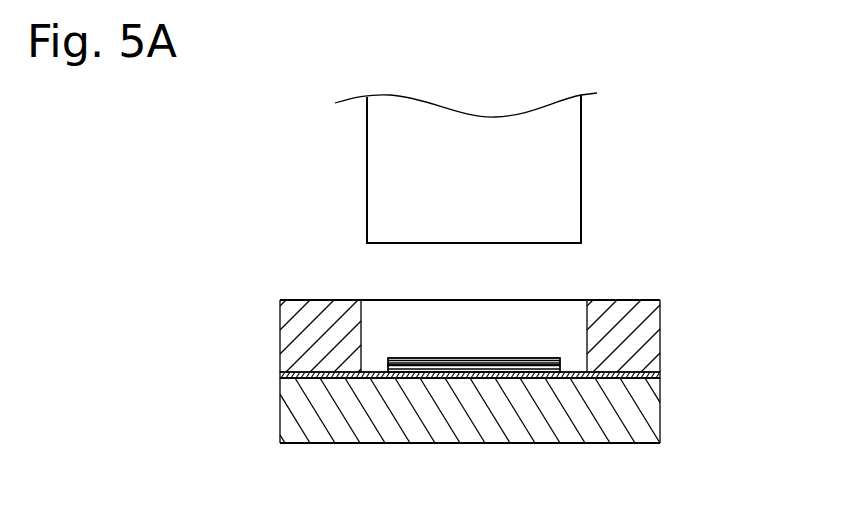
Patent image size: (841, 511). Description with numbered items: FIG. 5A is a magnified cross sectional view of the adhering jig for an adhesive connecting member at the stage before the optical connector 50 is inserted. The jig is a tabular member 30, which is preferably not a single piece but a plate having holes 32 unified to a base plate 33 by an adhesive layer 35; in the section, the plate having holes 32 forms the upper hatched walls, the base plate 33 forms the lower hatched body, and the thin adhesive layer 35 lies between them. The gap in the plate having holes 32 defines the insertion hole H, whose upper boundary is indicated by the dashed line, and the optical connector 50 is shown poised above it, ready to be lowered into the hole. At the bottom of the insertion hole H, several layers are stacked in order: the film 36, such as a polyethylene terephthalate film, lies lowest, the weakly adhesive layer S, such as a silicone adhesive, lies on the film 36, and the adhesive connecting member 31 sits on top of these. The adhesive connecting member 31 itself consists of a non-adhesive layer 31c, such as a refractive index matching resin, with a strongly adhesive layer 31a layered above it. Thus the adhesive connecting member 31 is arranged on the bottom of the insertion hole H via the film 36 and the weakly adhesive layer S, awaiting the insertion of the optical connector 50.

The optical connector 50 is at (581, 166).
The tabular member 30 is at (702, 298).
The plate having holes 32 is at (325, 306).
The adhesive connecting member 31 is at (418, 253).
The strongly adhesive layer 31a is at (494, 358).
The non-adhesive layer 31c is at (471, 372).
The adhesive layer 35 is at (398, 378).
The base plate 33 is at (331, 437).
The film 36 is at (525, 378).
The weakly adhesive layer S is at (457, 378).
The insertion hole H is at (530, 300).